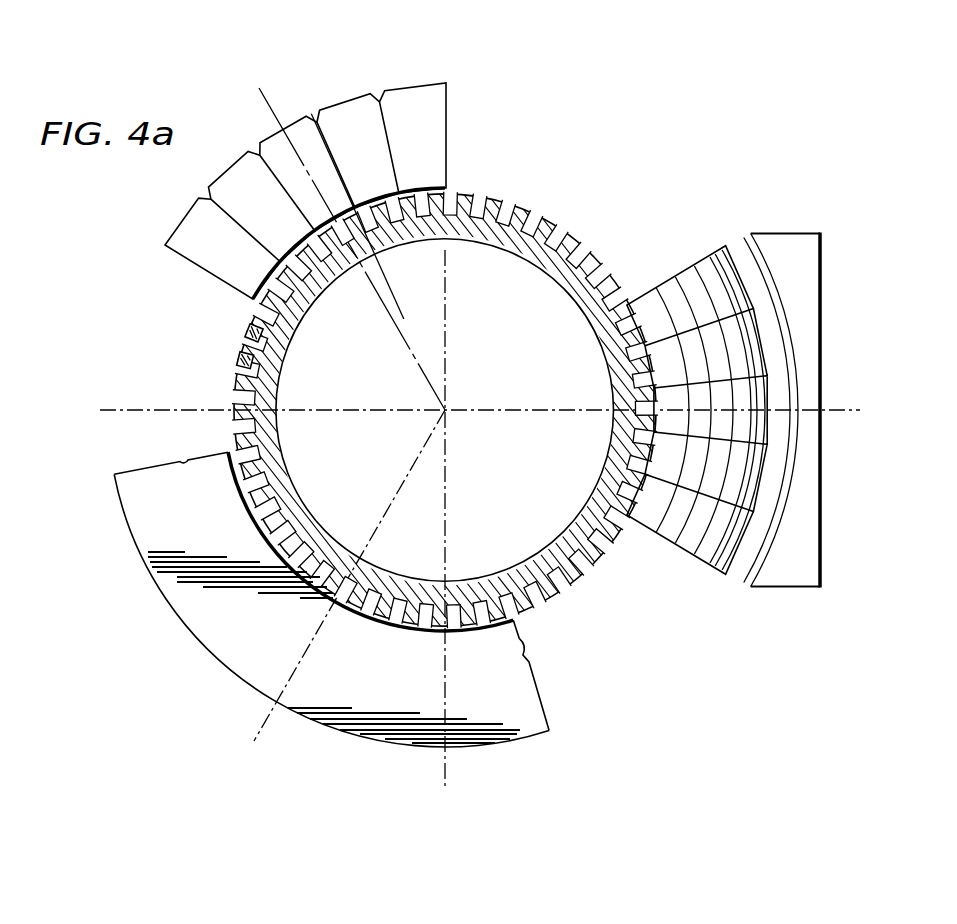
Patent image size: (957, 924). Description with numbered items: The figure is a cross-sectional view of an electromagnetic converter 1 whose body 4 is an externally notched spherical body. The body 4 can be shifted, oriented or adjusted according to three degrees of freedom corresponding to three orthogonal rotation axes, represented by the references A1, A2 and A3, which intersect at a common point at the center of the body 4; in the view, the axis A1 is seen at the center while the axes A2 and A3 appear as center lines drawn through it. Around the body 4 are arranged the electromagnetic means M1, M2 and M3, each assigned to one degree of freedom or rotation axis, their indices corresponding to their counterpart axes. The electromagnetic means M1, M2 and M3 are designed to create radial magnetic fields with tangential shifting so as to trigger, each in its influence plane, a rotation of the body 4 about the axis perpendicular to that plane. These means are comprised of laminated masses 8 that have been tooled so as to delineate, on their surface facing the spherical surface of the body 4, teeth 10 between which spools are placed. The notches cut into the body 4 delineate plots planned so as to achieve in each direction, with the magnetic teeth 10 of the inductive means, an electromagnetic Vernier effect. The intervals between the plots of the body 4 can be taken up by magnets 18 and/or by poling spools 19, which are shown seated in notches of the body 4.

The electromagnetic converter 1 is at (456, 410).
The body 4 is at (583, 270).
The laminated masses 8 is at (668, 522).
The teeth 10 is at (500, 656).
The magnets 18 is at (232, 326).
The poling spools 19 is at (225, 356).
The electromagnetic means M1 is at (350, 599).
The electromagnetic means M2 is at (462, 149).
The electromagnetic means M3 is at (723, 385).
The rotation axis A1 is at (445, 410).
The rotation axis A2 is at (404, 487).
The rotation axis A3 is at (188, 409).